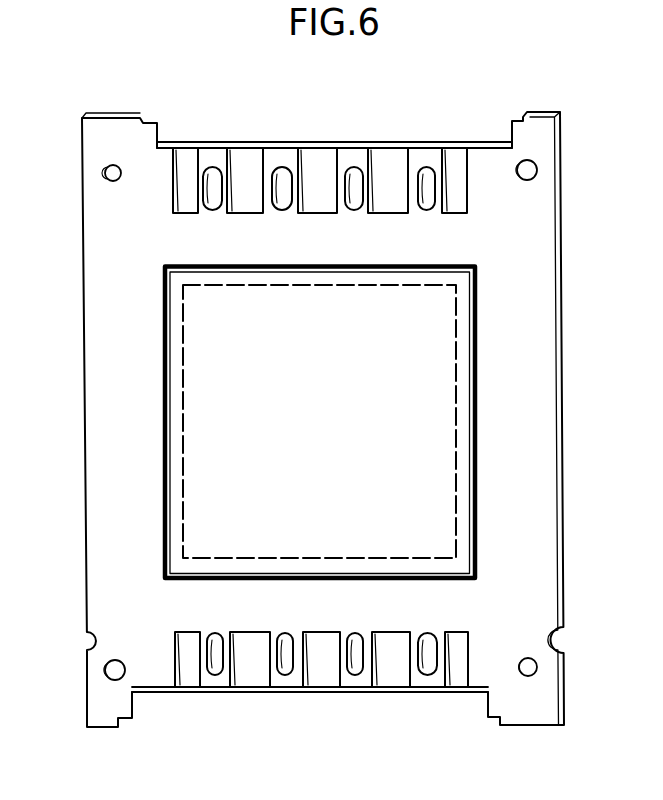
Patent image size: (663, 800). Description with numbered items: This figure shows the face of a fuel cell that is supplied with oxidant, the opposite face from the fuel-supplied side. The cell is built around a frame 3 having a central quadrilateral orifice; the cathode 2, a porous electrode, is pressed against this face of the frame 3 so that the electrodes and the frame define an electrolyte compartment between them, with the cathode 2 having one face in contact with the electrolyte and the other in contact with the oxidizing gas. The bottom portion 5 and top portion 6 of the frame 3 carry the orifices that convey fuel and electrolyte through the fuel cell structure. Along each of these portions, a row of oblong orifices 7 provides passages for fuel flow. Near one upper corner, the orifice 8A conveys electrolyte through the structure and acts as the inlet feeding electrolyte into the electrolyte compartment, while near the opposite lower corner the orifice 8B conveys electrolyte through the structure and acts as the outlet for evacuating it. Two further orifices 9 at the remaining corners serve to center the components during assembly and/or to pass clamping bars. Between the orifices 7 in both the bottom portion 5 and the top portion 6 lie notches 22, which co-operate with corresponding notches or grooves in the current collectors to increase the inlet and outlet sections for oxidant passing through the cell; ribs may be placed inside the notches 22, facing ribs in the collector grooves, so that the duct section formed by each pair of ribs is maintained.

The cathode 2 is at (423, 455).
The frame 3 is at (575, 273).
The bottom portion of the frame 5 is at (453, 608).
The top portion of the frame 6 is at (438, 223).
The orifices for fuel flow 7 is at (283, 177).
The electrolyte inlet orifice 8A is at (538, 173).
The electrolyte outlet orifice 8B is at (105, 677).
The centering orifices 9 is at (105, 175).
The notches 22 is at (242, 162).